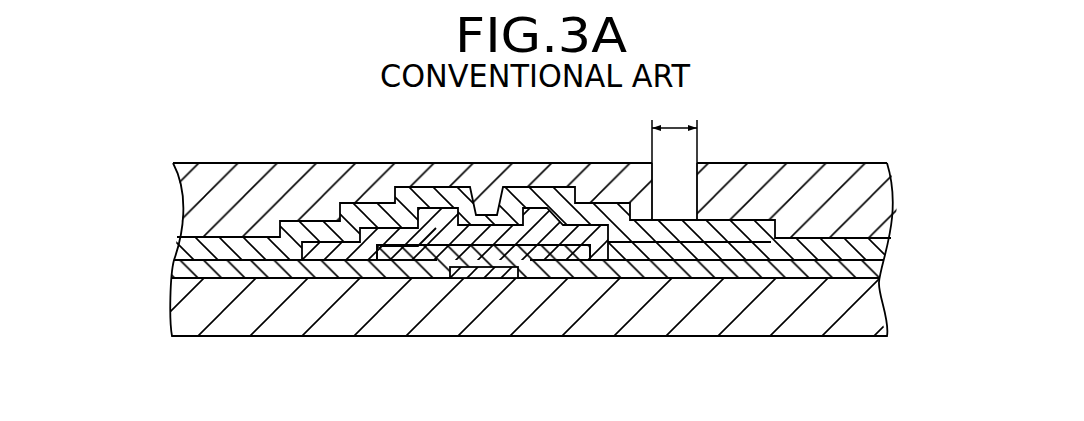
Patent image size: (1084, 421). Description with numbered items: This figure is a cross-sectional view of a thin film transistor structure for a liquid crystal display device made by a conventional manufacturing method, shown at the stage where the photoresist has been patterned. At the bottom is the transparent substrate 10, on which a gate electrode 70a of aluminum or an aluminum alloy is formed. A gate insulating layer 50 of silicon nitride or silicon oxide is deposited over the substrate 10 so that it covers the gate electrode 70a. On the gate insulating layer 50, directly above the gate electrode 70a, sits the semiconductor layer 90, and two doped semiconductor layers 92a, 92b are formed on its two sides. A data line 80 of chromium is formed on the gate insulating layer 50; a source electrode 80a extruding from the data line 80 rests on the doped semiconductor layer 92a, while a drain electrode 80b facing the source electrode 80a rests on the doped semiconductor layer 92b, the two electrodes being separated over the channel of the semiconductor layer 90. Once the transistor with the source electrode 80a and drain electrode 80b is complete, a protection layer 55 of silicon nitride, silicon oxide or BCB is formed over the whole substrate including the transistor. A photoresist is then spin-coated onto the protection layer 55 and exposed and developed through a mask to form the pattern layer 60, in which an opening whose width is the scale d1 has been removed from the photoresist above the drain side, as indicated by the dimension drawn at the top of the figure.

The transparent substrate 10 is at (823, 326).
The gate insulating layer 50 is at (693, 268).
The protection layer 55 is at (221, 257).
The pattern layer 60 is at (828, 172).
The gate electrode 70a is at (486, 279).
The data line 80 is at (316, 255).
The source electrode 80a is at (442, 195).
The drain electrode 80b is at (524, 222).
The semiconductor layer 90 is at (415, 257).
The doped semiconductor layer 92a is at (383, 240).
The doped semiconductor layer 92b is at (574, 262).
The scale of removed portion d1 is at (674, 131).